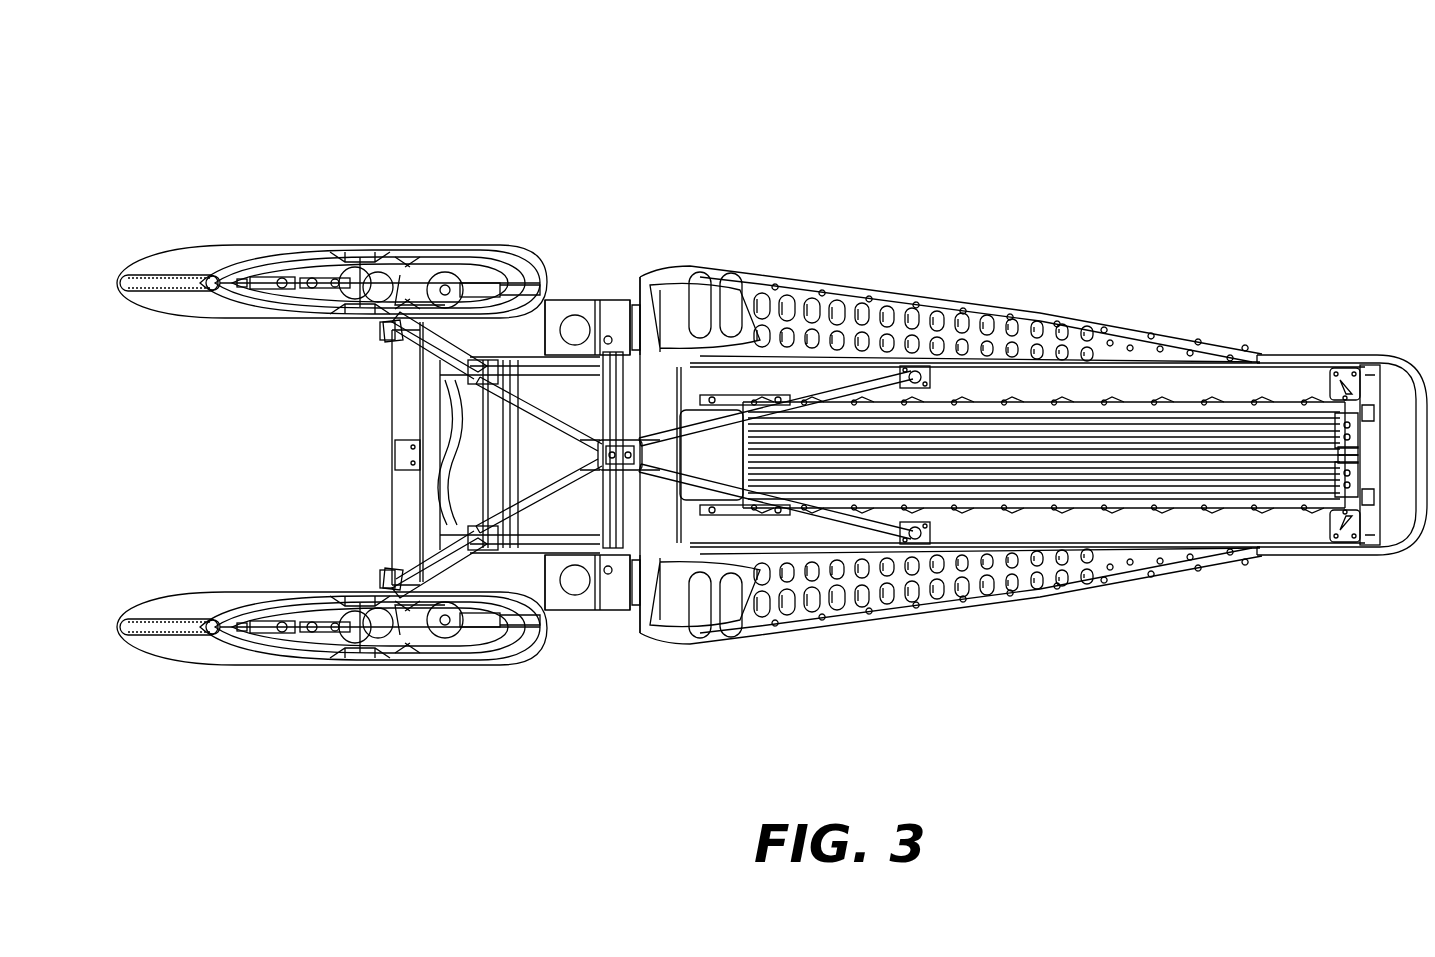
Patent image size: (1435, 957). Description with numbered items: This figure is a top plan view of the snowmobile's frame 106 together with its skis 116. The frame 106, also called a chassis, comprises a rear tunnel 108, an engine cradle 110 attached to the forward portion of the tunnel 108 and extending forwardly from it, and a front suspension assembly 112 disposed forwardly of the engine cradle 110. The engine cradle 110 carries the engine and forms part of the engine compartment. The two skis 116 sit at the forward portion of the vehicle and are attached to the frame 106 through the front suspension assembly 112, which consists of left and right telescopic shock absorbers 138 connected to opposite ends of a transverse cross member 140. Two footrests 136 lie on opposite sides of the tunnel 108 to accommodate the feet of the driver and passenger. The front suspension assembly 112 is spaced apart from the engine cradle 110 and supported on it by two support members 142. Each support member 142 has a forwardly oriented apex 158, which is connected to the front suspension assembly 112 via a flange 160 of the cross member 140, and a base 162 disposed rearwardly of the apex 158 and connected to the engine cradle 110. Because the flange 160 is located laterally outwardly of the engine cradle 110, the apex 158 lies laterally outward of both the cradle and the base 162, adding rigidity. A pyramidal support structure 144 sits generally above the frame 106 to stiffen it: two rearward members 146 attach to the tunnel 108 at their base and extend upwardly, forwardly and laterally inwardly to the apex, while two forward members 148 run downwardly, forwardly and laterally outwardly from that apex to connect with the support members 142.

The frame 106 is at (1031, 117).
The rear tunnel 108 is at (1105, 314).
The engine cradle 110 is at (594, 270).
The front suspension assembly 112 is at (410, 688).
The ski 116 is at (190, 246).
The footrest 136 is at (754, 298).
The telescopic shock absorber 138 is at (365, 254).
The transverse cross member 140 is at (398, 394).
The support member 142 is at (426, 370).
The pyramidal support structure 144 is at (589, 483).
The rearward member 146 is at (818, 512).
The forward member 148 is at (560, 452).
The apex 158 is at (383, 335).
The flange 160 is at (358, 284).
The base 162 is at (463, 290).